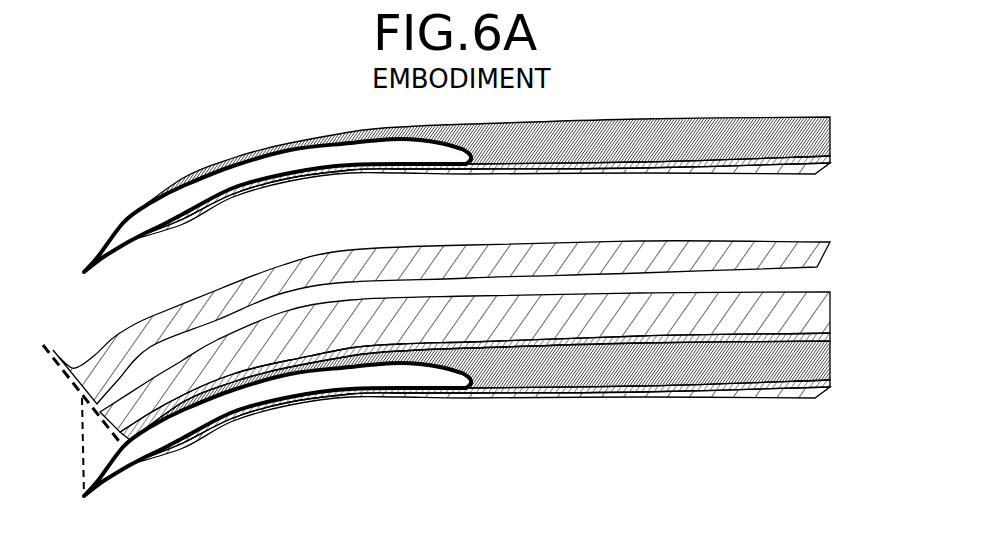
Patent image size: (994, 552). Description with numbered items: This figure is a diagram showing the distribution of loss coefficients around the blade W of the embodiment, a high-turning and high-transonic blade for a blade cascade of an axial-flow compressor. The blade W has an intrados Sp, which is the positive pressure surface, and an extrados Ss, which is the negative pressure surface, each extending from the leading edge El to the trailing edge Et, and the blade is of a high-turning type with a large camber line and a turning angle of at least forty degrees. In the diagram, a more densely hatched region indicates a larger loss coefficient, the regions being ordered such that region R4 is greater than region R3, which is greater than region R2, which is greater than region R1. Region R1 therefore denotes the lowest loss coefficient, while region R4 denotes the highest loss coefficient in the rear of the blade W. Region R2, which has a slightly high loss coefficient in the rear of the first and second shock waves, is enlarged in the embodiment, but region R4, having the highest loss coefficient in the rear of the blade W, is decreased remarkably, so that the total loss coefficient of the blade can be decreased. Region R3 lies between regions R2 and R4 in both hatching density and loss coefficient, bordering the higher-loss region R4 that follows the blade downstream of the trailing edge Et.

The region R1 is at (808, 212).
The region R2 is at (813, 168).
The region R3 is at (820, 157).
The region R4 is at (815, 135).
The extrados Ss is at (112, 457).
The intrados Sp is at (127, 477).
The leading edge El is at (83, 500).
The trailing edge Et is at (483, 390).
The blade W is at (249, 386).